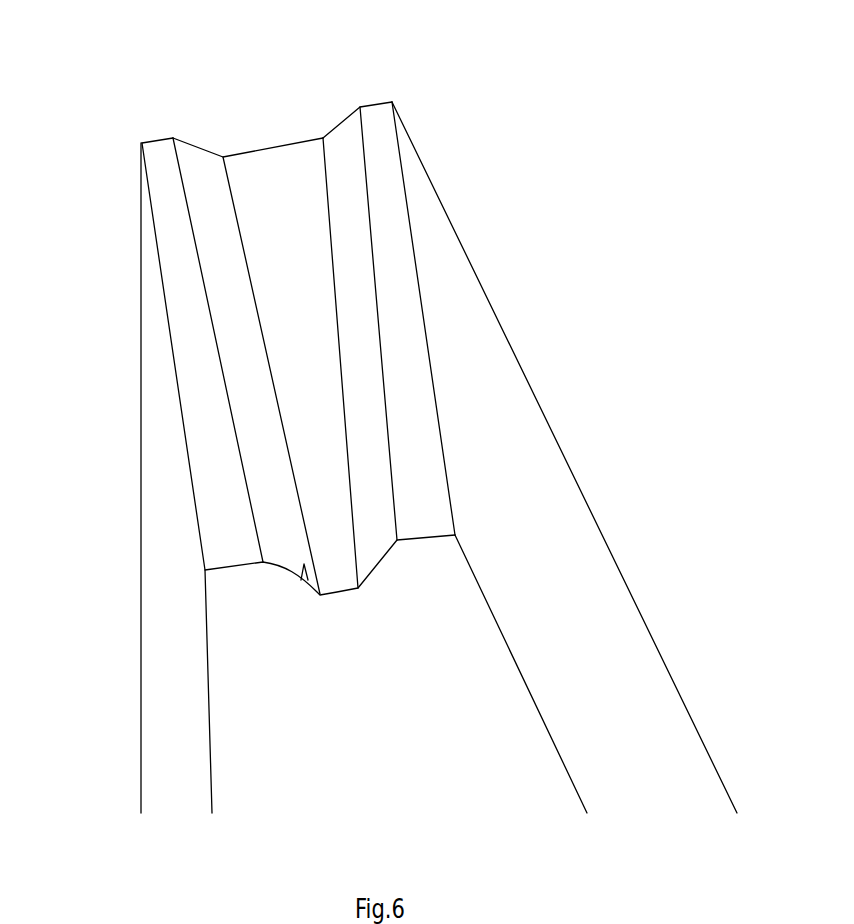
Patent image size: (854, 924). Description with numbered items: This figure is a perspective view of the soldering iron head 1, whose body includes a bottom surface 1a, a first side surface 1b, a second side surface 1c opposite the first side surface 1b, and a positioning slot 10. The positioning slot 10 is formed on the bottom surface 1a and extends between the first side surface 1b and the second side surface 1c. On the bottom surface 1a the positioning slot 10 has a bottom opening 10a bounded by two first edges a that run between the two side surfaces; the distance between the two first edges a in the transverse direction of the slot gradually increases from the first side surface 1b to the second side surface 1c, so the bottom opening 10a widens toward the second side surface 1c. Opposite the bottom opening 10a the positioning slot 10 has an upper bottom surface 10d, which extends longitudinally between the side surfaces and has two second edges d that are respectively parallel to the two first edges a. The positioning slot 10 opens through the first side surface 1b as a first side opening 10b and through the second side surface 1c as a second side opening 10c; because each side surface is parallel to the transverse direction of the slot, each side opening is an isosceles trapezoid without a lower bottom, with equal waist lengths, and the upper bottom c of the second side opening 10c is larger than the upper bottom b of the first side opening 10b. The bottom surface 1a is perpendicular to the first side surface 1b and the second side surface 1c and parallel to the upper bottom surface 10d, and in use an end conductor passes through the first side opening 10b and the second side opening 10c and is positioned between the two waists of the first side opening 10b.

The soldering iron head 1 is at (153, 742).
The bottom surface 1a is at (213, 500).
The first side surface 1b is at (487, 690).
The second side surface 1c is at (160, 142).
The positioning slot 10 is at (367, 435).
The bottom opening 10a is at (242, 328).
The first side opening 10b is at (300, 587).
The second side opening 10c is at (272, 118).
The upper bottom surface 10d is at (298, 285).
The first edges a is at (192, 228).
The upper bottom b is at (337, 595).
The upper bottom c is at (253, 148).
The second edges d is at (237, 389).